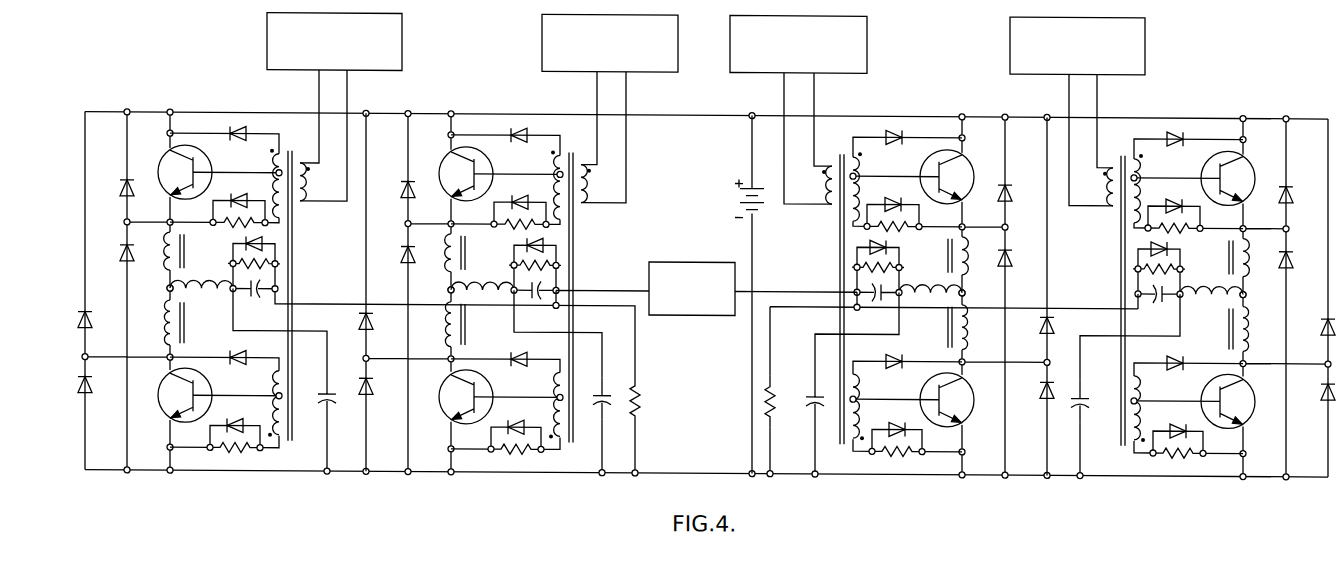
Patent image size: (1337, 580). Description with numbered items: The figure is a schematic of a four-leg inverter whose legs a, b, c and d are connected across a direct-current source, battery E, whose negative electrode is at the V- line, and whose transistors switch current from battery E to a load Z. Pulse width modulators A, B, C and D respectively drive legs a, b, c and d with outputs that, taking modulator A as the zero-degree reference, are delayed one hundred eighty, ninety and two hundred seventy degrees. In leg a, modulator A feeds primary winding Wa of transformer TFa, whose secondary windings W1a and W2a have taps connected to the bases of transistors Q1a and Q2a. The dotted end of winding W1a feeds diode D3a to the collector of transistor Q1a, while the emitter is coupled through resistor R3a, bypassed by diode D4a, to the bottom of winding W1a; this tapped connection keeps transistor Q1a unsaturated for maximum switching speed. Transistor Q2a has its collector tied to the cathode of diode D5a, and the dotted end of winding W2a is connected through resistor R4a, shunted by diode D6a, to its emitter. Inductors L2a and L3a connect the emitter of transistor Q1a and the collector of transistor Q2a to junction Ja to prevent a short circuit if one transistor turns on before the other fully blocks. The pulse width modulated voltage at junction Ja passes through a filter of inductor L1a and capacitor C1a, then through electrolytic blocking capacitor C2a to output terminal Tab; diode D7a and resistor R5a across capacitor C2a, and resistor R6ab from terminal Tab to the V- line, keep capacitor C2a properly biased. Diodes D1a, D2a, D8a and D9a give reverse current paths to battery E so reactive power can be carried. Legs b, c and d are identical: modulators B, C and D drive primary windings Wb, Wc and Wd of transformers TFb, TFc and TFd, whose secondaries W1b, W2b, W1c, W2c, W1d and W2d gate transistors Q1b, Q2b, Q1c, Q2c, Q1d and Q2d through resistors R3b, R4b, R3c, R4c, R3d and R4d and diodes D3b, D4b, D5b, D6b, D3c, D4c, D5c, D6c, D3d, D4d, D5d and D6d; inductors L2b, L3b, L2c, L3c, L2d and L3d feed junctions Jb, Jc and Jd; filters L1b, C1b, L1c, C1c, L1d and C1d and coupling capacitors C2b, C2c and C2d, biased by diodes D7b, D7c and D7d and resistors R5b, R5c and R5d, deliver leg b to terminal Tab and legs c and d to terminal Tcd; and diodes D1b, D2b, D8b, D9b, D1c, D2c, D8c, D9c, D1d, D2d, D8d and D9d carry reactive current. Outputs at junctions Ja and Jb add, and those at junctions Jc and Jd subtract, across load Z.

The pulse width modulator A is at (388, 13).
The pulse width modulator B is at (663, 13).
The pulse width modulator C is at (852, 13).
The pulse width modulator D is at (1131, 13).
The battery E is at (738, 192).
The load Z is at (702, 258).
The V- line V- is at (727, 476).
The leg a is at (197, 107).
The leg b is at (505, 105).
The leg c is at (920, 102).
The leg d is at (1207, 100).
The output terminal Tab is at (560, 286).
The output terminal Tcd is at (855, 285).
The resistor R6ab is at (641, 396).
The transistor Q1a is at (168, 158).
The transistor Q2a is at (168, 412).
The diode D1a is at (119, 191).
The diode D2a is at (103, 379).
The diode D3a is at (236, 129).
The diode D4a is at (234, 199).
The diode D5a is at (236, 350).
The diode D6a is at (222, 420).
The diode D7a is at (244, 242).
The diode D8a is at (120, 262).
The diode D9a is at (103, 313).
The resistor R3a is at (229, 224).
The resistor R4a is at (233, 452).
The resistor R5a is at (236, 264).
The secondary winding W1a is at (270, 169).
The secondary winding W2a is at (272, 386).
The primary winding Wa is at (307, 185).
The transformer TFa is at (292, 228).
The inductor L1a is at (222, 292).
The inductor L2a is at (166, 252).
The inductor L3a is at (166, 317).
The capacitor C1a is at (316, 397).
The capacitor C2a is at (254, 304).
The junction Ja is at (166, 288).
The transistor Q1b is at (450, 151).
The transistor Q2b is at (450, 410).
The diode D1b is at (408, 190).
The diode D2b is at (366, 386).
The diode D3b is at (505, 142).
The diode D4b is at (520, 209).
The diode D5b is at (505, 362).
The diode D6b is at (516, 434).
The diode D7b is at (535, 251).
The diode D8b is at (408, 255).
The diode D9b is at (366, 321).
The resistor R3b is at (505, 224).
The resistor R4b is at (505, 446).
The resistor R5b is at (535, 275).
The secondary winding W1b is at (549, 167).
The secondary winding W2b is at (557, 381).
The primary winding Wb is at (586, 181).
The transformer TFb is at (574, 222).
The inductor L1b is at (500, 288).
The inductor L2b is at (451, 253).
The inductor L3b is at (449, 331).
The capacitor C1b is at (590, 396).
The capacitor C2b is at (535, 305).
The junction Jb is at (449, 286).
The transistor Q1c is at (960, 150).
The transistor Q2c is at (962, 407).
The diode D1c is at (1005, 193).
The diode D2c is at (1047, 390).
The diode D3c is at (907, 144).
The diode D4c is at (893, 211).
The diode D5c is at (907, 364).
The diode D6c is at (897, 436).
The diode D7c is at (878, 253).
The diode D8c is at (1005, 258).
The diode D9c is at (1047, 325).
The resistor R3c is at (907, 226).
The resistor R4c is at (907, 448).
The resistor R5c is at (878, 277).
The secondary winding W1c is at (856, 165).
The secondary winding W2c is at (853, 377).
The primary winding Wc is at (828, 182).
The transformer TFc is at (838, 223).
The inductor L1c is at (925, 285).
The inductor L2c is at (984, 243).
The inductor L3c is at (982, 325).
The capacitor C1c is at (802, 393).
The capacitor C2c is at (874, 306).
The junction Jc is at (963, 282).
The transistor Q1d is at (1243, 153).
The transistor Q2d is at (1246, 405).
The diode D1d is at (1286, 195).
The diode D2d is at (1328, 392).
The diode D3d is at (1188, 146).
The diode D4d is at (1174, 213).
The diode D5d is at (1188, 366).
The diode D6d is at (1178, 438).
The diode D7d is at (1159, 255).
The diode D8d is at (1286, 260).
The diode D9d is at (1328, 327).
The resistor R3d is at (1188, 228).
The resistor R4d is at (1188, 450).
The resistor R5d is at (1159, 279).
The secondary winding W1d is at (1140, 166).
The secondary winding W2d is at (1136, 375).
The primary winding Wd is at (1110, 180).
The transformer TFd is at (1120, 223).
The inductor L1d is at (1218, 287).
The inductor L2d is at (1263, 243).
The inductor L3d is at (1262, 323).
The capacitor C1d is at (1086, 391).
The capacitor C2d is at (1159, 307).
The junction Jd is at (1243, 285).